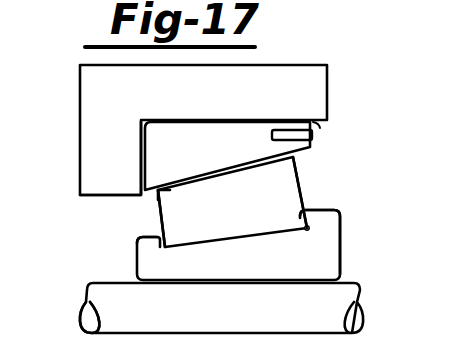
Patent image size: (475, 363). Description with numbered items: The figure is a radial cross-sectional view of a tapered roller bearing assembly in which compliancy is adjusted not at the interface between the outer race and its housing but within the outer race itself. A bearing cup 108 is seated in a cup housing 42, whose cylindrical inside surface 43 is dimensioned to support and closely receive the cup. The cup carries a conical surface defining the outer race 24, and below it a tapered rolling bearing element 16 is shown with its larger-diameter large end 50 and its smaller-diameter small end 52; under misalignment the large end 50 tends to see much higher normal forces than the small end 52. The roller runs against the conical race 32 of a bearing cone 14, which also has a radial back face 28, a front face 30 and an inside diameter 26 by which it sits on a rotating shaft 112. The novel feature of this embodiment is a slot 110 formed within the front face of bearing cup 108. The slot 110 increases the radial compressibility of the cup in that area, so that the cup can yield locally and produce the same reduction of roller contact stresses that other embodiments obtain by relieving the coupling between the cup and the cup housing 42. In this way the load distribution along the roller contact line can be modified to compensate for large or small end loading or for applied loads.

The cup housing 42 is at (336, 86).
The bearing cup 108 is at (141, 150).
The race 24 is at (312, 158).
The cylindrical inside surface 43 is at (320, 122).
The slot 110 is at (312, 137).
The race 32 is at (253, 232).
The tapered rolling bearing element 16 is at (150, 221).
The large end 50 is at (303, 195).
The small end 52 is at (157, 204).
The bearing cone 14 is at (350, 270).
The radial back face 28 is at (137, 262).
The front face 30 is at (342, 250).
The inside diameter 26 is at (217, 284).
The rotating shaft 112 is at (84, 322).